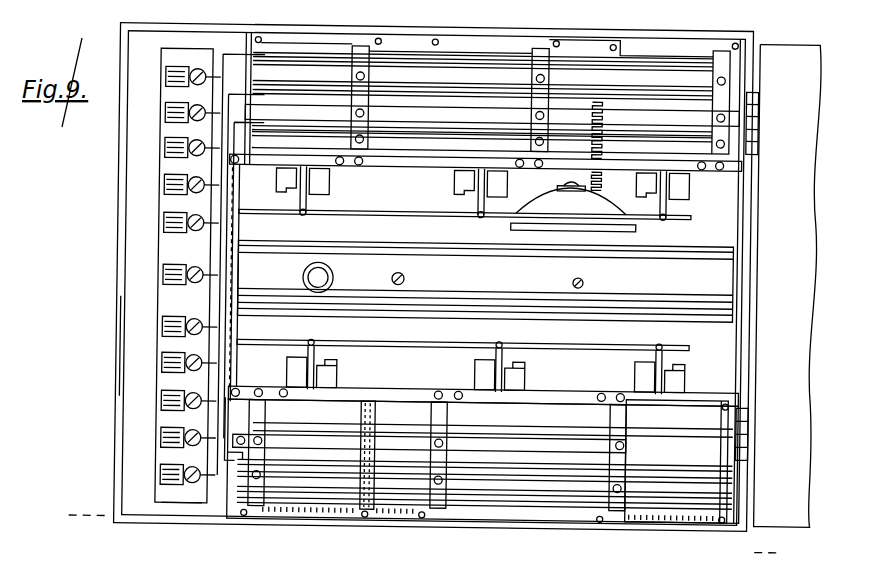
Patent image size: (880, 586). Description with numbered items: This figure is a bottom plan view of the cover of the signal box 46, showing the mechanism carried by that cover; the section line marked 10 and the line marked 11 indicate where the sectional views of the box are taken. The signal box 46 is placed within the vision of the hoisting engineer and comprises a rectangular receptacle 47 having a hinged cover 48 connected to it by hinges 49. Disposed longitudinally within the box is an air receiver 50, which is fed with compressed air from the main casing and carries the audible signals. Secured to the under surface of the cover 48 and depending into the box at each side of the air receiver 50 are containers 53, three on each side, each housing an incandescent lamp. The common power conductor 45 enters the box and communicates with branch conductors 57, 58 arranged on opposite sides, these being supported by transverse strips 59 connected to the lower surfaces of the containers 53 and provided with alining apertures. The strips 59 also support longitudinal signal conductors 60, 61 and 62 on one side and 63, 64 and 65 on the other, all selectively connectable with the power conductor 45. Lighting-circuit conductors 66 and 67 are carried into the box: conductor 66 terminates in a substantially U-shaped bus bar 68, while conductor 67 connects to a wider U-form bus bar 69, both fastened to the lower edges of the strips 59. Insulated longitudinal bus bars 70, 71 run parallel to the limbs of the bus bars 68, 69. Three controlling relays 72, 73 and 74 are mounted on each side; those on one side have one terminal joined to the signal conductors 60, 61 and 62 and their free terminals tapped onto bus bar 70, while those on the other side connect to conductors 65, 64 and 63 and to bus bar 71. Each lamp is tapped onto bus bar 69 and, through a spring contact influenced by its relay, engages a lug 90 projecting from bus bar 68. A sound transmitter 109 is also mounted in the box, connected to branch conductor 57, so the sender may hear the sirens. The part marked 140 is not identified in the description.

The section line 10 is at (425, 533).
The casing 11 is at (228, 30).
The conductor 45 is at (165, 370).
The signal box 46 is at (118, 186).
The rectangular receptacle 47 is at (123, 349).
The hinged cover 48 is at (788, 286).
The hinges 49 is at (757, 127).
The air receiver 50 is at (485, 281).
The containers 53 is at (300, 70).
The branch conductor 57 is at (357, 85).
The branch conductor 58 is at (290, 462).
The strips 59 is at (538, 60).
The signal conductor 60 is at (190, 70).
The signal conductor 61 is at (172, 108).
The signal conductor 62 is at (165, 151).
The signal conductor 63 is at (165, 405).
The signal conductor 64 is at (165, 441).
The signal conductor 65 is at (165, 477).
The conductor 66 is at (165, 222).
The conductor 67 is at (165, 325).
The bus bar 68 is at (431, 199).
The bus bar 69 is at (392, 166).
The bus bar 70 is at (400, 100).
The bus bar 71 is at (370, 445).
The controlling relay 72 is at (306, 357).
The controlling relay 73 is at (489, 357).
The controlling relay 74 is at (657, 357).
The lug 90 is at (306, 200).
The sound transmitter 109 is at (570, 215).
The terminal board support 140 is at (183, 505).